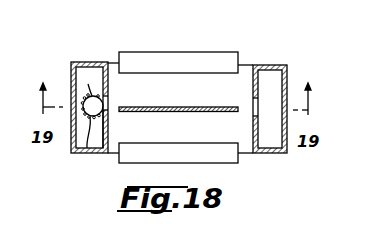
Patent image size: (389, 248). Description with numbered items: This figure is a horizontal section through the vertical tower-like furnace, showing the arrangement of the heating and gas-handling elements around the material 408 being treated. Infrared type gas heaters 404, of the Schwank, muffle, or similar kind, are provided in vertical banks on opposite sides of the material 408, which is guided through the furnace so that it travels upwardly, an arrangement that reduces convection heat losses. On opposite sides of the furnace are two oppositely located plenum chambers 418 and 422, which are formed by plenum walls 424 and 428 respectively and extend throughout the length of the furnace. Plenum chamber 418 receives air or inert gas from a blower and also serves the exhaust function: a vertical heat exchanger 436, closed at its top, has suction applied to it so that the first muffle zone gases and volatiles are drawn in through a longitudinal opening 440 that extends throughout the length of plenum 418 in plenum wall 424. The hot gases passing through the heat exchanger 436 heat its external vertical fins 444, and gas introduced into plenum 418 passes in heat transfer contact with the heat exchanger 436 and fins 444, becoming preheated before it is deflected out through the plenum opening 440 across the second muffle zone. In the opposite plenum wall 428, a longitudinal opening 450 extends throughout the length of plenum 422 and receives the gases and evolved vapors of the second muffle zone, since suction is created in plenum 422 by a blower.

The infrared type gas heaters 404 is at (200, 40).
The material 408 is at (197, 107).
The plenum chamber 418 is at (92, 53).
The plenum chamber 422 is at (272, 77).
The plenum wall 424 is at (106, 122).
The plenum wall 428 is at (253, 133).
The vertical heat exchanger 436 is at (87, 153).
The longitudinal opening 440 is at (110, 100).
The external vertical fins 444 is at (88, 84).
The longitudinal opening 450 is at (253, 110).